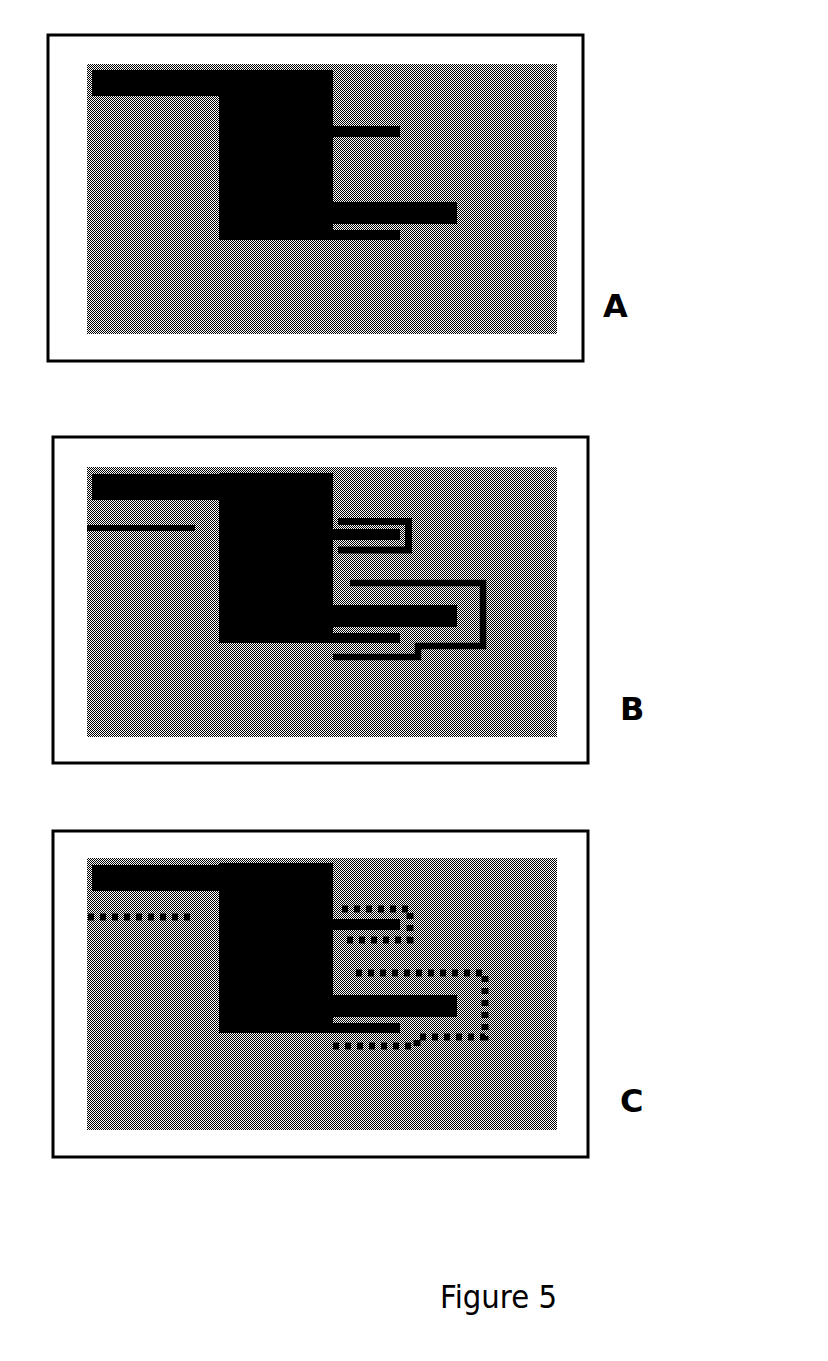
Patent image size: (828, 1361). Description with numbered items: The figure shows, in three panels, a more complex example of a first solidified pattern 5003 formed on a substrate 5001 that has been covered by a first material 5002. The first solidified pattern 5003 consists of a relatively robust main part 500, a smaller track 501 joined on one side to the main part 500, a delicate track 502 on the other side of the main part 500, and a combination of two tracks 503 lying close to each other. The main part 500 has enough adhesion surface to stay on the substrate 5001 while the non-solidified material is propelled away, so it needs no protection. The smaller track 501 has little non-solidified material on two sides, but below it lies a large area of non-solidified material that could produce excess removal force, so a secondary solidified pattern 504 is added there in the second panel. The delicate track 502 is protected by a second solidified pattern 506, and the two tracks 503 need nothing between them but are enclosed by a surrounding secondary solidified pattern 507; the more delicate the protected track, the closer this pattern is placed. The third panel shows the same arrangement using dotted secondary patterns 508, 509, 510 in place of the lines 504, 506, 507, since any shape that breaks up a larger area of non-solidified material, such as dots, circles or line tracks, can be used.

The main part 500 is at (283, 518).
The smaller track 501 is at (195, 447).
The delicate track 502 is at (407, 510).
The two tracks 503 is at (408, 631).
The secondary solidified pattern 504 is at (172, 469).
The second solidified pattern 506 is at (421, 476).
The surrounding secondary solidified pattern 507 is at (512, 629).
The dotted conductive line 508 is at (173, 858).
The first dotted loop 509 is at (426, 867).
The second dotted loop 510 is at (512, 1024).
The substrate 5001 is at (372, 596).
The first material 5002 is at (391, 597).
The first solidified pattern 5003 is at (514, 590).